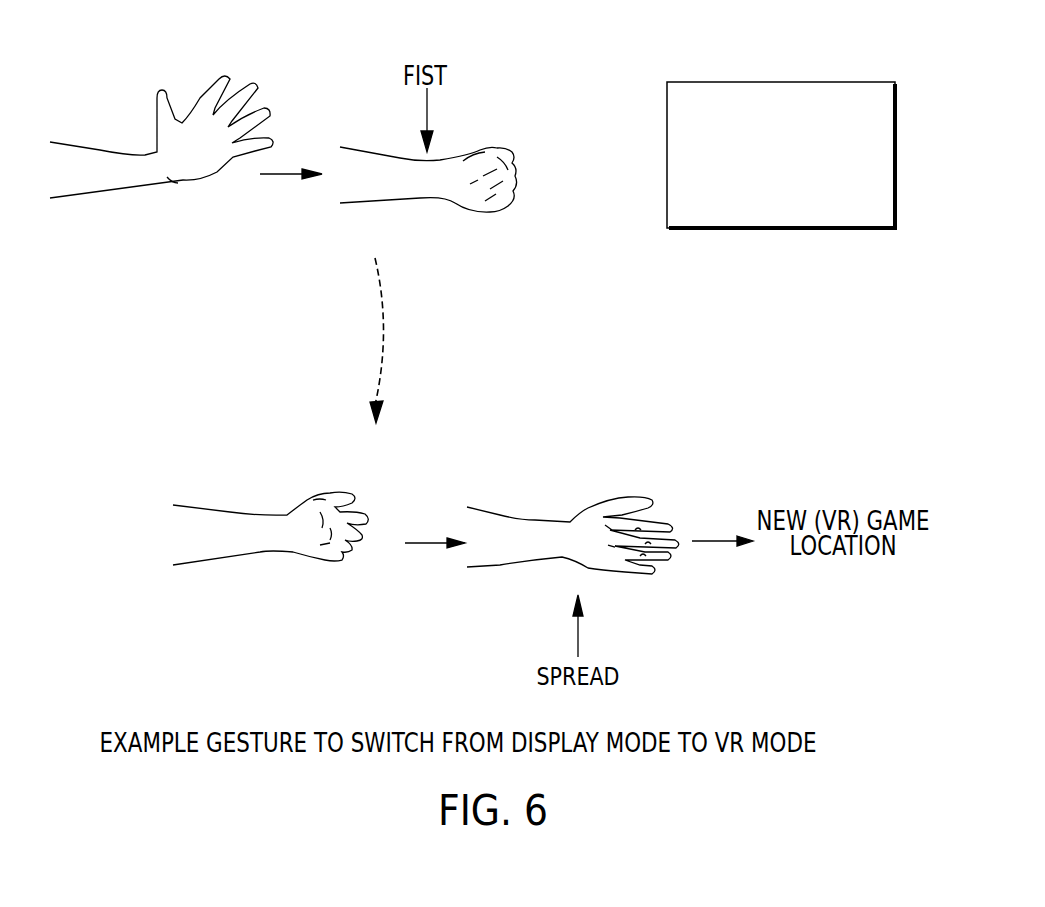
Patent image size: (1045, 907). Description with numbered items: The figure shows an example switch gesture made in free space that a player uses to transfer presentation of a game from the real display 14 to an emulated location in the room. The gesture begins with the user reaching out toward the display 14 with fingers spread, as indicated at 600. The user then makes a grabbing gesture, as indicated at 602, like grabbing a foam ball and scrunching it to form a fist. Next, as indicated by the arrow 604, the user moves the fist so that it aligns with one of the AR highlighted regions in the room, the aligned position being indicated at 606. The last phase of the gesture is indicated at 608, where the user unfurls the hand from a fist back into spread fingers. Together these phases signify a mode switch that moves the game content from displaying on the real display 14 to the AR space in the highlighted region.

The display 14 is at (667, 155).
The reaching gesture with fingers spread 600 is at (162, 90).
The grabbing gesture 602 is at (500, 148).
The arrow 604 is at (385, 340).
The hand aligned with highlighted region 606 is at (342, 490).
The unfurling gesture 608 is at (610, 502).